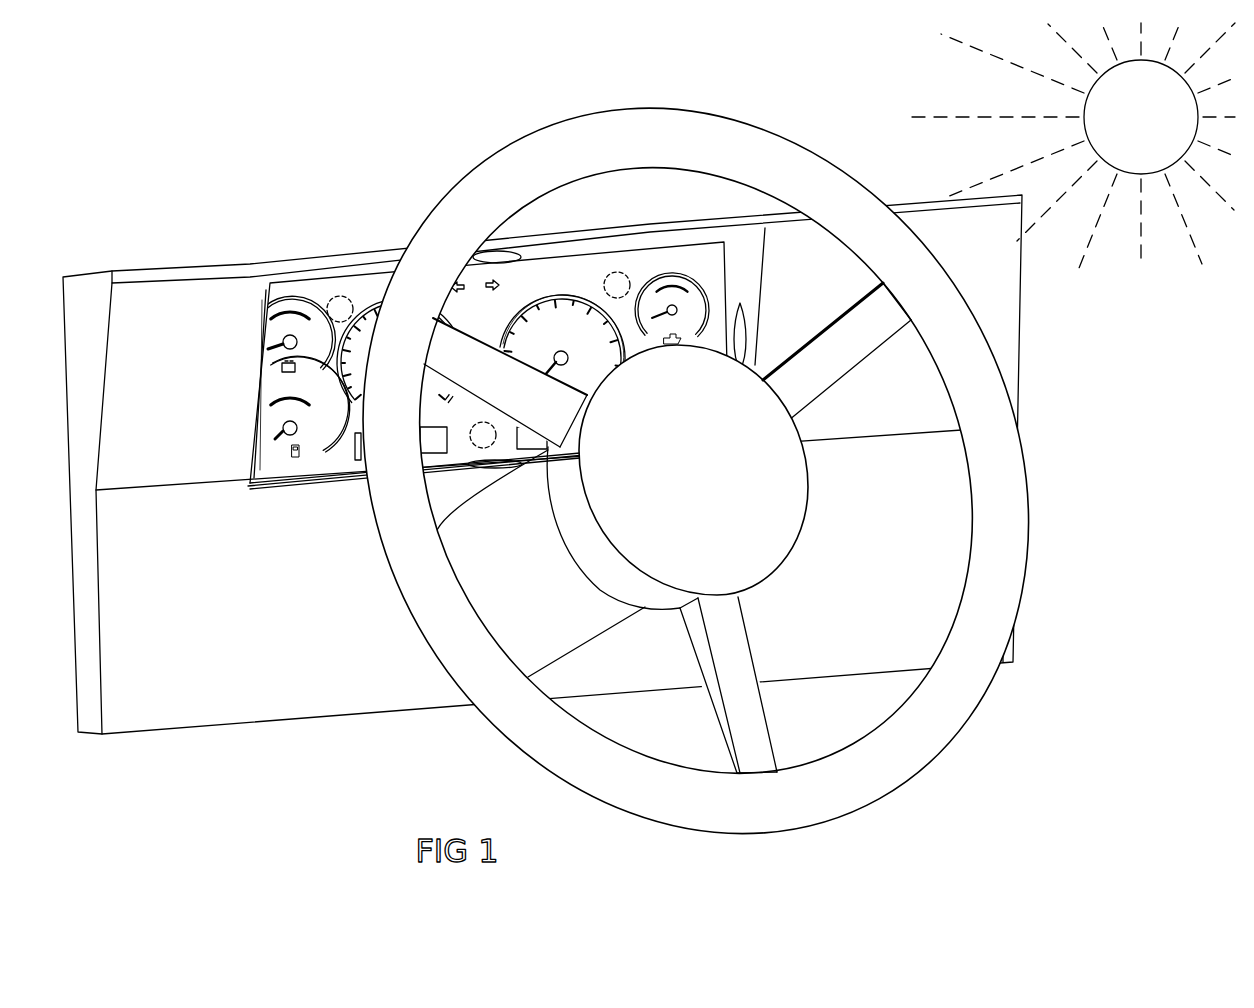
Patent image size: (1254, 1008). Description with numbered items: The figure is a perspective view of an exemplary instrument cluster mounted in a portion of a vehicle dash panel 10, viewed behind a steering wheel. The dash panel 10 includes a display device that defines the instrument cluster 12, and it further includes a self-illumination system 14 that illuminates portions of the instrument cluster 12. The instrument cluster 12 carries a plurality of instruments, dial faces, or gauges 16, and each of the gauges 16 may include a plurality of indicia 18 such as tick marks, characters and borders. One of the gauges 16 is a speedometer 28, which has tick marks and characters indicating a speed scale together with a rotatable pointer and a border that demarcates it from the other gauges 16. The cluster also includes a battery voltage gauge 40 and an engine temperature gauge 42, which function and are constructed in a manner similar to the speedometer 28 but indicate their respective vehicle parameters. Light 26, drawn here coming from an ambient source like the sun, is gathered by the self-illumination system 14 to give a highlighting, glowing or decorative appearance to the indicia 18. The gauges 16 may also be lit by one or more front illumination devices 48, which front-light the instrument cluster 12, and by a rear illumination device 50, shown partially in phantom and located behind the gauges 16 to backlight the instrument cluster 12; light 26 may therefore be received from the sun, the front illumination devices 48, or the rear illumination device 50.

The dash panel 10 is at (972, 258).
The instrument cluster 12 is at (368, 285).
The self-illumination system 14 is at (349, 465).
The gauges 16 is at (445, 308).
The indicia 18 is at (592, 296).
The light 26 is at (958, 120).
The speedometer 28 is at (581, 280).
The battery voltage gauge 40 is at (260, 371).
The engine temperature gauge 42 is at (251, 477).
The front illumination devices 48 is at (509, 254).
The rear illumination device 50 is at (333, 293).